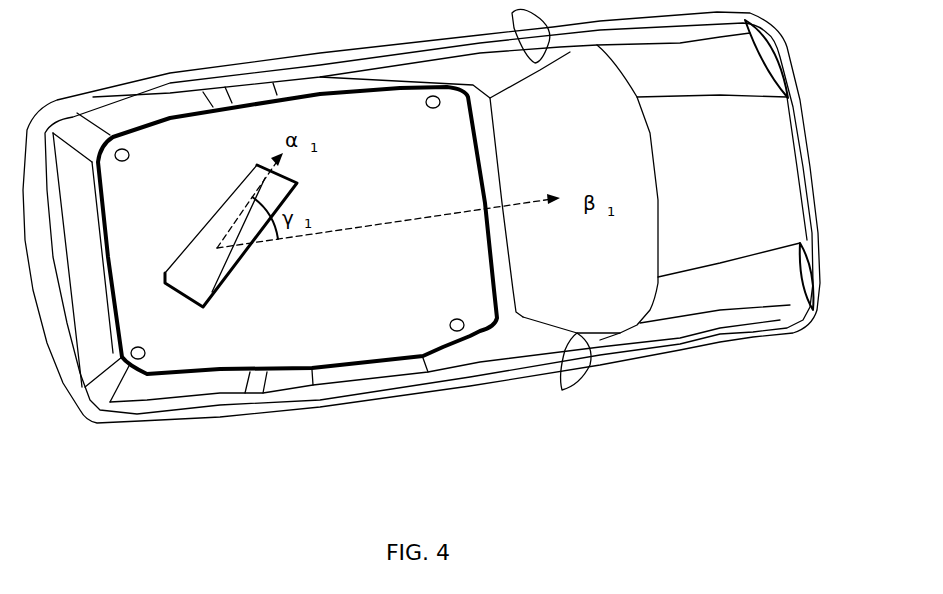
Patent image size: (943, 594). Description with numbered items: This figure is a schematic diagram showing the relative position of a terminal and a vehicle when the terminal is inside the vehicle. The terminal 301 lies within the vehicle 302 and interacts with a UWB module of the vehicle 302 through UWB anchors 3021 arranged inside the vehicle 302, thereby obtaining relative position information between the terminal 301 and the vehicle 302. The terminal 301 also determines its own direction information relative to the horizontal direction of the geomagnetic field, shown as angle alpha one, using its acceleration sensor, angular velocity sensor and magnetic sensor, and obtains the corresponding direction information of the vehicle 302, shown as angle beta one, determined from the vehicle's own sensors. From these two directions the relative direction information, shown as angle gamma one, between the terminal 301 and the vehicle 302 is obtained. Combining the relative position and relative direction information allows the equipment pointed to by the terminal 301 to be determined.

The terminal 301 is at (205, 227).
The vehicle 302 is at (152, 100).
The UWB anchor 3021 is at (129, 153).